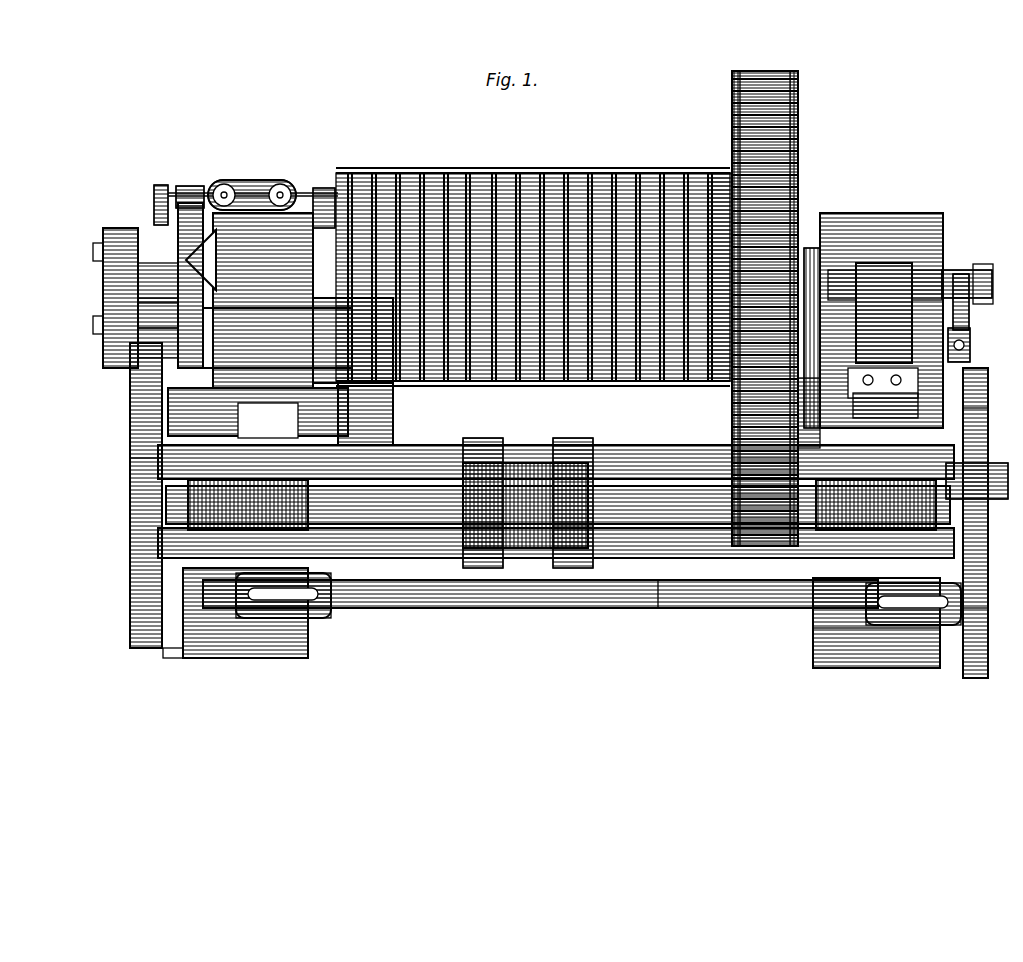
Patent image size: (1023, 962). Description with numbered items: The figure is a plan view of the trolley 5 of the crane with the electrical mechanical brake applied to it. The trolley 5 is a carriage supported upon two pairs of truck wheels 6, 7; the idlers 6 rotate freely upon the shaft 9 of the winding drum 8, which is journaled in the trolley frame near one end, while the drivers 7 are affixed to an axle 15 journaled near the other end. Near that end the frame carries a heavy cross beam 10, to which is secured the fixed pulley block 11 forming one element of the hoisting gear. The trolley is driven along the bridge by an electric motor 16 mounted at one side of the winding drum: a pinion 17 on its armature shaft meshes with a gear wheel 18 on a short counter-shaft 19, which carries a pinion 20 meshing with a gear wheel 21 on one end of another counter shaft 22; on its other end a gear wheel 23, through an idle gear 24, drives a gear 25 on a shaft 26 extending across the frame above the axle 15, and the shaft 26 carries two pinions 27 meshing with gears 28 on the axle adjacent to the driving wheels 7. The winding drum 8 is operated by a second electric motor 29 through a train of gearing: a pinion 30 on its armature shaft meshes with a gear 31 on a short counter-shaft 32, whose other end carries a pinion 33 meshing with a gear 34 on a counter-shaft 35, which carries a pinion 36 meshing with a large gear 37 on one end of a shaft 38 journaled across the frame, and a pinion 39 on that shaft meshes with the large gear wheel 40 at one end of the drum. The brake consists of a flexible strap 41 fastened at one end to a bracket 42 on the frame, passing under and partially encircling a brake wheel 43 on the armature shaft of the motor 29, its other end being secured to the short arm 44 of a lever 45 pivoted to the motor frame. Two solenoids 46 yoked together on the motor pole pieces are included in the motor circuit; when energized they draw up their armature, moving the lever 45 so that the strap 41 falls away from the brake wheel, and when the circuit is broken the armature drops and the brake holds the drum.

The trolley 5 is at (533, 263).
The truck wheels 6 is at (858, 230).
The truck wheels 7 is at (848, 660).
The winding drum 8 is at (472, 165).
The shaft 9 is at (940, 270).
The cross beam 10 is at (638, 446).
The fixed pulley block 11 is at (528, 503).
The axle 15 is at (412, 600).
The electric motor 16 is at (958, 292).
The pinion 17 is at (800, 240).
The gear wheel 18 is at (760, 345).
The counter-shaft 19 is at (962, 337).
The pinion 20 is at (845, 330).
The gear wheel 21 is at (724, 420).
The counter shaft 22 is at (978, 378).
The gear wheel 23 is at (978, 402).
The idle gear 24 is at (978, 520).
The gear 25 is at (978, 622).
The shaft 26 is at (768, 611).
The pinions 27 is at (216, 650).
The gears 28 is at (180, 645).
The electric motor 29 is at (249, 300).
The pinion 30 is at (96, 226).
The gear 31 is at (108, 292).
The counter-shaft 32 is at (138, 312).
The pinion 33 is at (353, 340).
The gear 34 is at (385, 408).
The counter-shaft 35 is at (312, 400).
The pinion 36 is at (126, 392).
The large gear 37 is at (130, 440).
The shaft 38 is at (558, 505).
The pinion 39 is at (724, 520).
The large gear wheel 40 is at (757, 63).
The flexible strap 41 is at (168, 192).
The bracket 42 is at (112, 274).
The brake wheel 43 is at (170, 212).
The short arm 44 is at (150, 177).
The lever 45 is at (182, 185).
The solenoids 46 is at (240, 176).